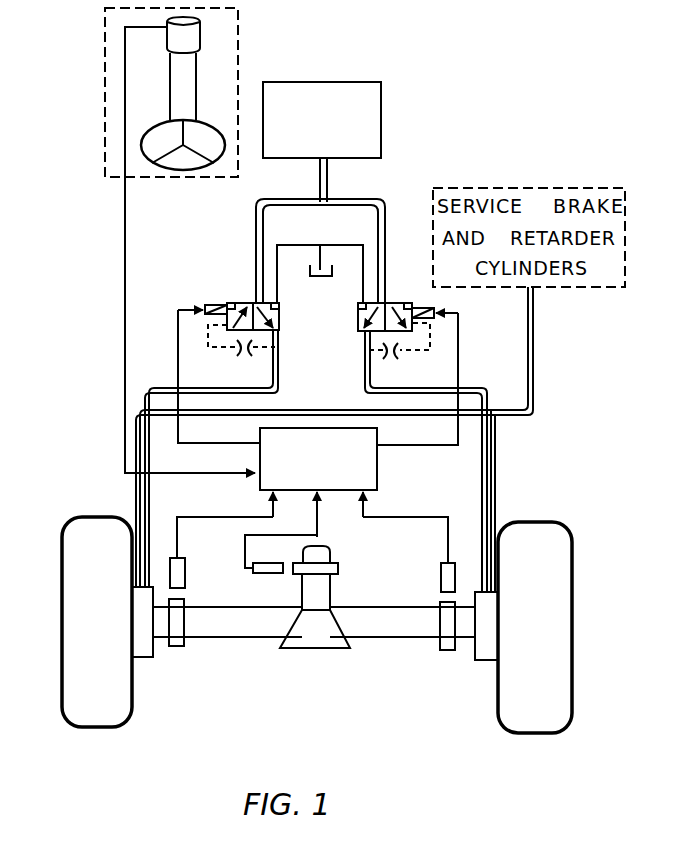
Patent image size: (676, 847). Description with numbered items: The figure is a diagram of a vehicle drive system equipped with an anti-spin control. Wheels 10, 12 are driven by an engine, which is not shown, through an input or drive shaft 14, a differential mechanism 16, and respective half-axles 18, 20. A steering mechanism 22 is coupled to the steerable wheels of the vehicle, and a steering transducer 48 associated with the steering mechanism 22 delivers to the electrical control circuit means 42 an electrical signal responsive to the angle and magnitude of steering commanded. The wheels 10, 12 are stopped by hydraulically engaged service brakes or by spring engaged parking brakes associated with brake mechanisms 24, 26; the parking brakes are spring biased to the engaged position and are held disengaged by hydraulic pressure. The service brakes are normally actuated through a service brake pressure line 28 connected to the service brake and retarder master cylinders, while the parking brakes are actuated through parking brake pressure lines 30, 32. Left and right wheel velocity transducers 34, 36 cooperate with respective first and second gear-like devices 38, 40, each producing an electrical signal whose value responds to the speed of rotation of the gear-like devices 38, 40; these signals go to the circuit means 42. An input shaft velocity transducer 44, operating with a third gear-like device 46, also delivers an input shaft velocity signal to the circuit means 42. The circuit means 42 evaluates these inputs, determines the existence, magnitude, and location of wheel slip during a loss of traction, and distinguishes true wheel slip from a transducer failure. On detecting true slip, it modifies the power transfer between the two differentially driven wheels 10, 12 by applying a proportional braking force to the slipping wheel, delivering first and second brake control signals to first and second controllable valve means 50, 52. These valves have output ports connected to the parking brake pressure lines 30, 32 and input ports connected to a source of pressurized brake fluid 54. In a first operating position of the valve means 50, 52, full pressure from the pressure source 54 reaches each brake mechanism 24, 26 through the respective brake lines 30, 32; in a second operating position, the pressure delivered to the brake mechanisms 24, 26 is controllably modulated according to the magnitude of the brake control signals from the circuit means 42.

The wheel 10 is at (85, 727).
The wheel 12 is at (550, 733).
The input shaft 14 is at (330, 590).
The differential mechanism 16 is at (322, 650).
The half-axle 18 is at (240, 640).
The half-axle 20 is at (388, 640).
The steering mechanism 22 is at (238, 52).
The brake mechanism 24 is at (140, 658).
The brake mechanism 26 is at (487, 660).
The service brake pressure line 28 is at (533, 355).
The parking brake pressure line 30 is at (278, 352).
The parking brake pressure line 32 is at (365, 350).
The left wheel velocity transducer 34 is at (185, 565).
The right wheel velocity transducer 36 is at (441, 575).
The first gear-like device 38 is at (175, 647).
The second gear-like device 40 is at (447, 650).
The electrical control circuit means 42 is at (377, 470).
The input shaft velocity transducer 44 is at (277, 574).
The third gear-like device 46 is at (338, 568).
The steering transducer 48 is at (200, 45).
The first controllable valve means 50 is at (246, 303).
The second controllable valve means 52 is at (388, 303).
The source of pressurized brake fluid 54 is at (381, 97).